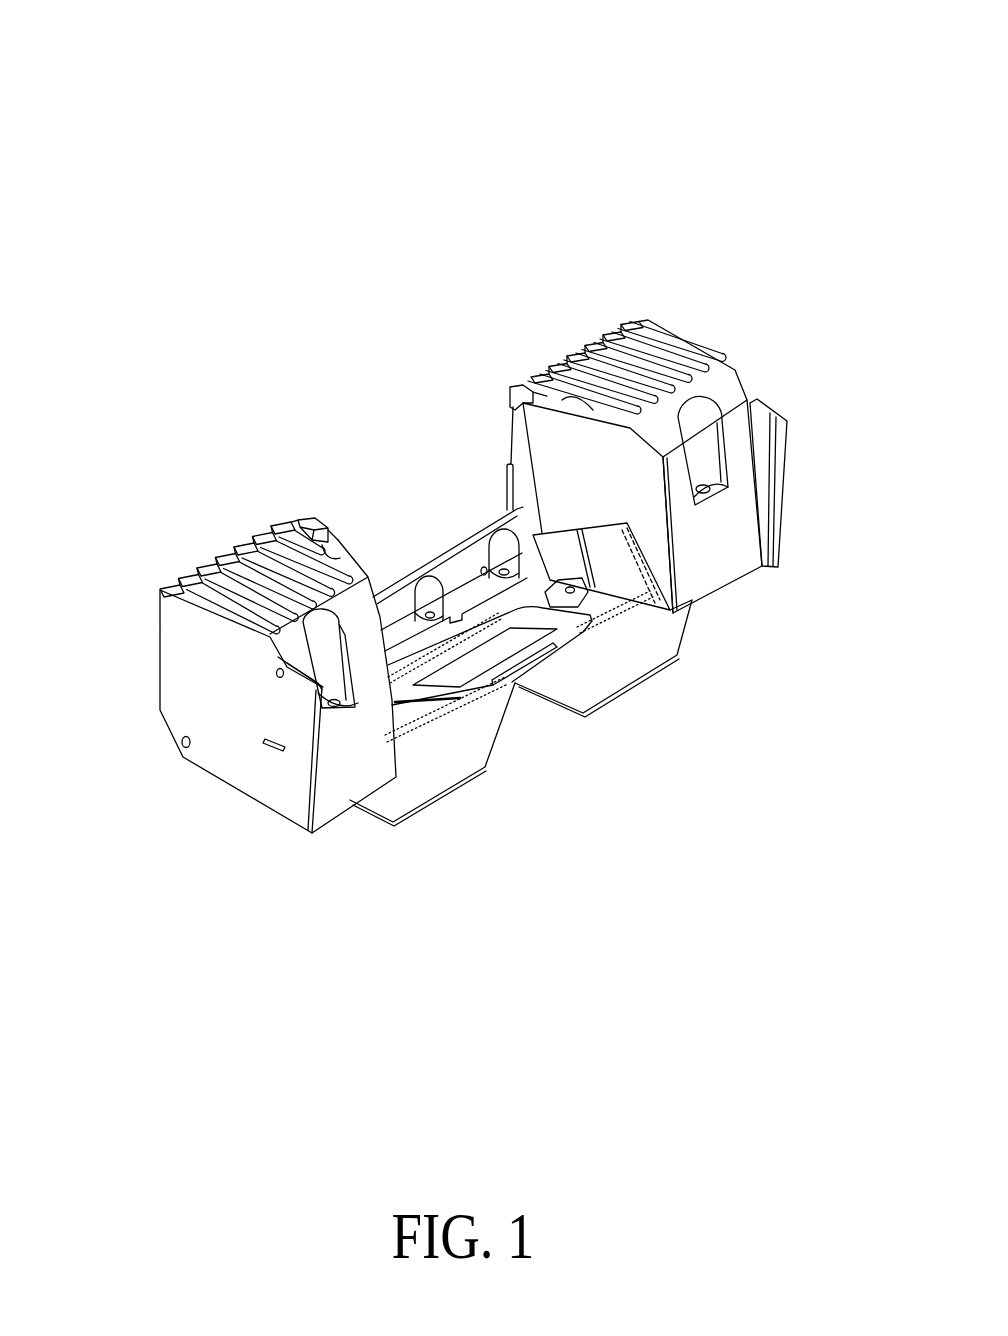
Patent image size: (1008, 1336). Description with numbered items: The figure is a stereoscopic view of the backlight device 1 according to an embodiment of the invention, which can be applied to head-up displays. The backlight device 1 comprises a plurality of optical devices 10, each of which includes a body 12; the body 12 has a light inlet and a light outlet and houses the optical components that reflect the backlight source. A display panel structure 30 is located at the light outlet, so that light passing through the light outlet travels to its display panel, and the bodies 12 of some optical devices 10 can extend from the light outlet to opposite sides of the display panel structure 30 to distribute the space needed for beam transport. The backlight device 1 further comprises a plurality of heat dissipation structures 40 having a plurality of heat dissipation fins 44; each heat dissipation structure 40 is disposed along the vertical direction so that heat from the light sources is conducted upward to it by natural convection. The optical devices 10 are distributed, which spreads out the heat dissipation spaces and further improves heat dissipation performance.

The backlight device 1 is at (848, 42).
The optical device 10 is at (521, 725).
The body 12 is at (450, 755).
The display panel structure 30 is at (480, 587).
The heat dissipation structure 40 is at (420, 573).
The heat dissipation fins 44 is at (553, 367).